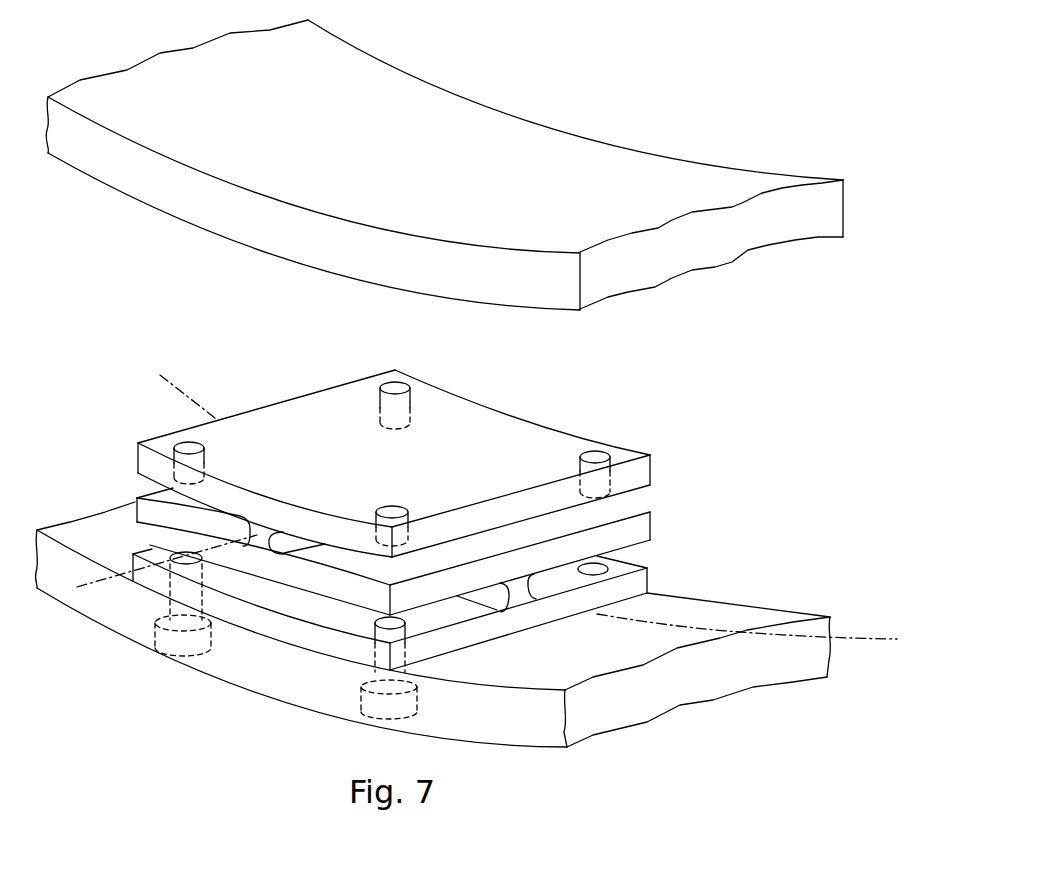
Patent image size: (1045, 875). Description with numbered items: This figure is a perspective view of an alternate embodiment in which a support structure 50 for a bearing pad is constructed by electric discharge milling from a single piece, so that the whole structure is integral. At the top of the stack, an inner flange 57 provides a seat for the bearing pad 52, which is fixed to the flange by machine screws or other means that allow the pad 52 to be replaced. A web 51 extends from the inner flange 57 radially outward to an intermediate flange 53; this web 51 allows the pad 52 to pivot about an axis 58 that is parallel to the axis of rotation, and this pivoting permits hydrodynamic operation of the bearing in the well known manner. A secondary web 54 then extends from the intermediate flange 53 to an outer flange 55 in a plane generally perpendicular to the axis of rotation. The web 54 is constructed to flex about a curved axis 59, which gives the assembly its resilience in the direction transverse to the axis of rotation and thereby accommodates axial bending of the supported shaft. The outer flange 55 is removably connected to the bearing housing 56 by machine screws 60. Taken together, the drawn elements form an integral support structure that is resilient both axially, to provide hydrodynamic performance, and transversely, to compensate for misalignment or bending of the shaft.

The support structure 50 is at (122, 478).
The web 51 is at (236, 523).
The bearing pad 52 is at (205, 117).
The intermediate flange 53 is at (135, 517).
The secondary web 54 is at (525, 588).
The outer flange 55 is at (390, 612).
The bearing housing 56 is at (277, 700).
The inner flange 57 is at (138, 460).
The axis 58 is at (92, 582).
The curved axis 59 is at (862, 637).
The machine screws 60 is at (173, 653).